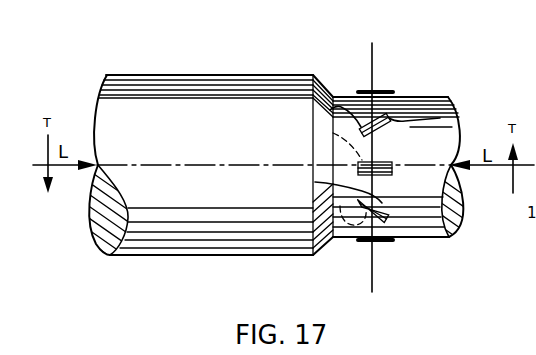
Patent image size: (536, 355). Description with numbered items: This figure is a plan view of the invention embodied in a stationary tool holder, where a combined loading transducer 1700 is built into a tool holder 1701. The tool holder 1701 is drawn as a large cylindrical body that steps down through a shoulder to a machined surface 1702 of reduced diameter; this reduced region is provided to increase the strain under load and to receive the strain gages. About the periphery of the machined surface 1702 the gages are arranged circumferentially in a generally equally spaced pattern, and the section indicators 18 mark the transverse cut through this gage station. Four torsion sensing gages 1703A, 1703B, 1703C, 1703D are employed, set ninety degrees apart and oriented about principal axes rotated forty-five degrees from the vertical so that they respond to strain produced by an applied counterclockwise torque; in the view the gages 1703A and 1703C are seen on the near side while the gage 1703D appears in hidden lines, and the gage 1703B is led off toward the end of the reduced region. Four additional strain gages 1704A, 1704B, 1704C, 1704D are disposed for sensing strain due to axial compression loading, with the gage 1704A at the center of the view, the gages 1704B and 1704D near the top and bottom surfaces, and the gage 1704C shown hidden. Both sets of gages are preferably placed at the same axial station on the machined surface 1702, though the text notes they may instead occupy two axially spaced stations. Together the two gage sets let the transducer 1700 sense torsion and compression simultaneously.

The combined loading transducer 1700 is at (350, 79).
The tool holder 1701 is at (193, 75).
The machined surface of reduced diameter 1702 is at (423, 238).
The torsion sensing gage 1703A is at (330, 110).
The torsion sensing gage 1703B is at (440, 118).
The torsion sensing gage 1703C is at (315, 182).
The torsion sensing gage 1703D is at (340, 205).
The strain gage 1704A is at (358, 165).
The strain gage 1704B is at (389, 96).
The strain gage 1704C is at (330, 132).
The strain gage 1704D is at (383, 242).
The section line 18- 18 is at (386, 290).